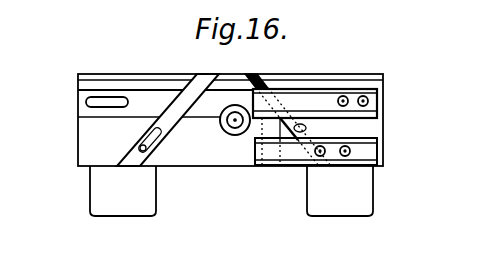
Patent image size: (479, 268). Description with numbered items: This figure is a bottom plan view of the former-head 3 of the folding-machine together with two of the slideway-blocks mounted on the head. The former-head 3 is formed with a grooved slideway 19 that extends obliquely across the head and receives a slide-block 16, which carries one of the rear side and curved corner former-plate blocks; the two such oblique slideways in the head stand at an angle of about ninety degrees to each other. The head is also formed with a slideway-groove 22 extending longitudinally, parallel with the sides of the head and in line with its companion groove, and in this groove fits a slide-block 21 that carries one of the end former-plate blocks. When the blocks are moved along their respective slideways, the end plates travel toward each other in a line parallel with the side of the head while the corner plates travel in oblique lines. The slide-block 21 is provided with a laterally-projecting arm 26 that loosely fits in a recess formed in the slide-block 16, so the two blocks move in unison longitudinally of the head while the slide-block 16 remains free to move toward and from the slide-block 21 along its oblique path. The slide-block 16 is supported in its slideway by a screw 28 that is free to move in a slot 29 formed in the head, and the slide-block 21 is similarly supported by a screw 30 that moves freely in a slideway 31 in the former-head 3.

The former-head 3 is at (346, 74).
The slide-block 16 is at (368, 149).
The grooved slideway 19 is at (275, 88).
The slide-block 21 is at (377, 103).
The slideway-groove 22 is at (138, 103).
The laterally-projecting arm 26 is at (262, 126).
The screw 28 is at (317, 147).
The slot 29 is at (158, 141).
The screw 30 is at (366, 101).
The slideway 31 is at (86, 102).